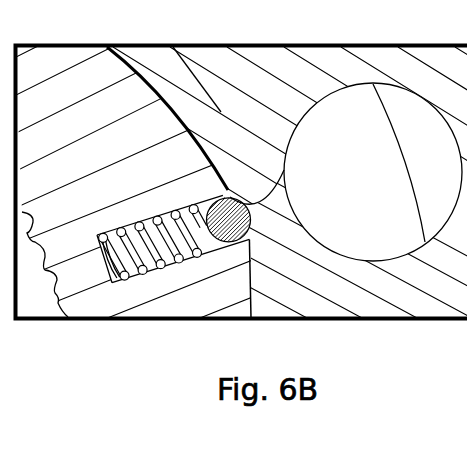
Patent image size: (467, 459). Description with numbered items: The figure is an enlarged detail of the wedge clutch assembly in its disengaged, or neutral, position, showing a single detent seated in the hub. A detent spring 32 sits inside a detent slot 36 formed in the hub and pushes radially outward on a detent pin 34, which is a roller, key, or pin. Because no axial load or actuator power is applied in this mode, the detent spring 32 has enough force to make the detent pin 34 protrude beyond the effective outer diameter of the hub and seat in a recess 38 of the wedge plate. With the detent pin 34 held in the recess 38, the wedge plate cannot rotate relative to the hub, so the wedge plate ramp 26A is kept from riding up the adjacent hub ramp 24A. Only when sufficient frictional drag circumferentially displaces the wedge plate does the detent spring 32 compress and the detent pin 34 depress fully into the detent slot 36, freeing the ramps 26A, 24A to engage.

The hub ramp 24A is at (221, 178).
The wedge plate ramp 26A is at (251, 241).
The detent spring 32 is at (188, 235).
The detent pin 34 is at (223, 228).
The detent slot 36 is at (118, 222).
The recess 38 is at (260, 207).